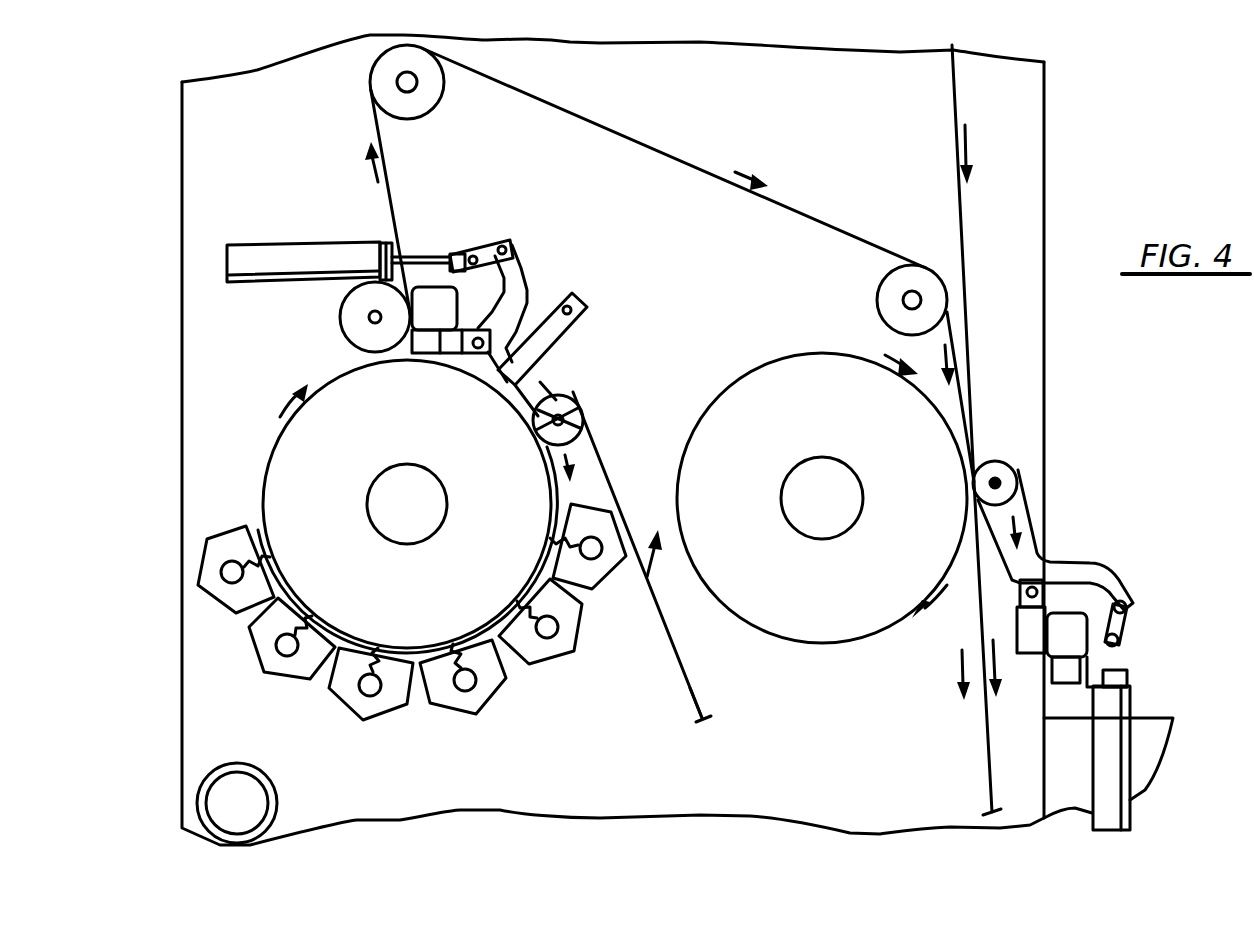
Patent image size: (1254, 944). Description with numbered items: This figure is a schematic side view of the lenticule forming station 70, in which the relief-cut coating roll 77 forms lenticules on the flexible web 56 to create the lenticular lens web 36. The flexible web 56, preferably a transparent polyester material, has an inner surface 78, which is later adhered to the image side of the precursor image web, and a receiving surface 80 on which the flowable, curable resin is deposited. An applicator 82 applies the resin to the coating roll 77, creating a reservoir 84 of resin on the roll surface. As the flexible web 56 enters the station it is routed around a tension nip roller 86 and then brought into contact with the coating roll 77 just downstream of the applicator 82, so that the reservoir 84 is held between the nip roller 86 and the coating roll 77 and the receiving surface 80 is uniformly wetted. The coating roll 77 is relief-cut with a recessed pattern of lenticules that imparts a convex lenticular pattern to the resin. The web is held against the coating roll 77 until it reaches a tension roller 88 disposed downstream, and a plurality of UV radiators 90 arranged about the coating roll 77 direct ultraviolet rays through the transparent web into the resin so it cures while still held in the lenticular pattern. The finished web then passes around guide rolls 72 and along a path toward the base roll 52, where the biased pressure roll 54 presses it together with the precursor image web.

The lenticular lens web 36 is at (627, 133).
The base roll 52 is at (868, 632).
The biased pressure roll 54 is at (1015, 464).
The flexible web 56 is at (700, 690).
The lenticule forming station 70 is at (232, 376).
The guide rolls 72 is at (428, 105).
The coating roll 77 is at (280, 501).
The inner surface 78 is at (693, 683).
The receiving surface 80 is at (615, 463).
The applicator 82 is at (568, 331).
The reservoir 84 is at (505, 382).
The tension nip roller 86 is at (598, 440).
The tension roller 88 is at (340, 320).
The UV radiators 90 is at (232, 615).